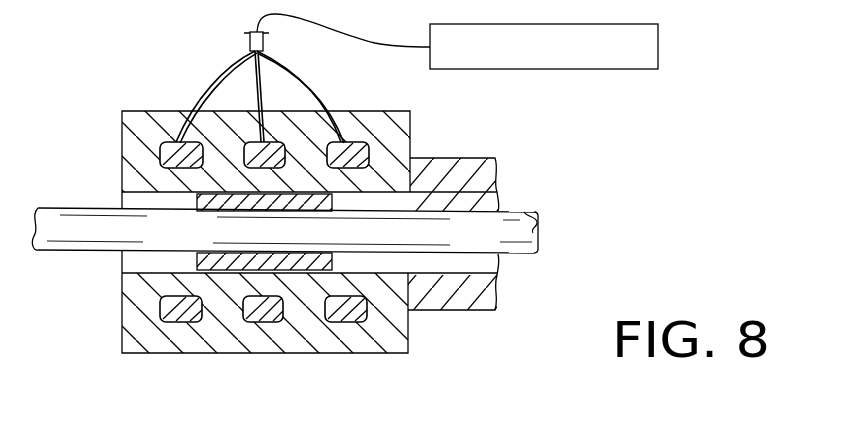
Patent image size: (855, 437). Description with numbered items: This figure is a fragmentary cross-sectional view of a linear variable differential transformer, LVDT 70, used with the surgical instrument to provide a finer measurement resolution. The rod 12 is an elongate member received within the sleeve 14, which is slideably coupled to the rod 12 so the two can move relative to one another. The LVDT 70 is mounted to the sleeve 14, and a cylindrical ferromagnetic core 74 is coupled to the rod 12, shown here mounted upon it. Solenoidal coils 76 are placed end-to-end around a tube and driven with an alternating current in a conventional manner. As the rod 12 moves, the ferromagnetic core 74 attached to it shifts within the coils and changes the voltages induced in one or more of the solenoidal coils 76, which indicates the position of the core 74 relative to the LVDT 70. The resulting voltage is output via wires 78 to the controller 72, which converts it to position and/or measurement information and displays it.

The rod 12 is at (522, 213).
The sleeve 14 is at (468, 305).
The LVDT 70 is at (84, 141).
The controller 72 is at (658, 47).
The ferromagnetic core 74 is at (200, 260).
The solenoidal coils 76 is at (189, 318).
The wires 78 is at (265, 68).